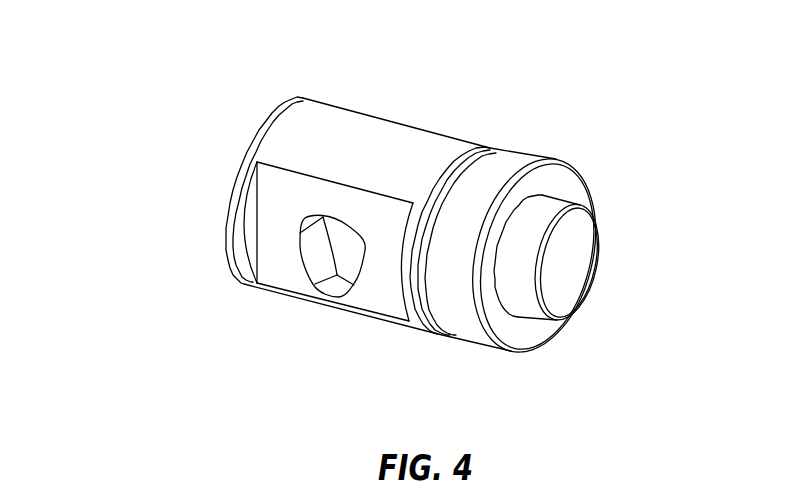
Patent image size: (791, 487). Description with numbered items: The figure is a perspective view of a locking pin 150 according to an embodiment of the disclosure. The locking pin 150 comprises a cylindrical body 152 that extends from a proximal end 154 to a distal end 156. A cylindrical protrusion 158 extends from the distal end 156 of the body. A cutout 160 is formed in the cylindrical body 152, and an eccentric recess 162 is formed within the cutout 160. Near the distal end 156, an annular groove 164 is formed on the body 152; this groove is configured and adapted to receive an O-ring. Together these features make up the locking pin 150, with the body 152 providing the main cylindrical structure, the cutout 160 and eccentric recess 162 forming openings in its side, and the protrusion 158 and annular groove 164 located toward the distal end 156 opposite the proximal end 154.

The locking pin 150 is at (153, 155).
The cylindrical body 152 is at (357, 137).
The proximal end 154 is at (248, 133).
The distal end 156 is at (573, 170).
The cylindrical protrusion 158 is at (592, 229).
The cutout 160 is at (280, 263).
The eccentric recess 162 is at (328, 285).
The annular groove 164 is at (418, 318).